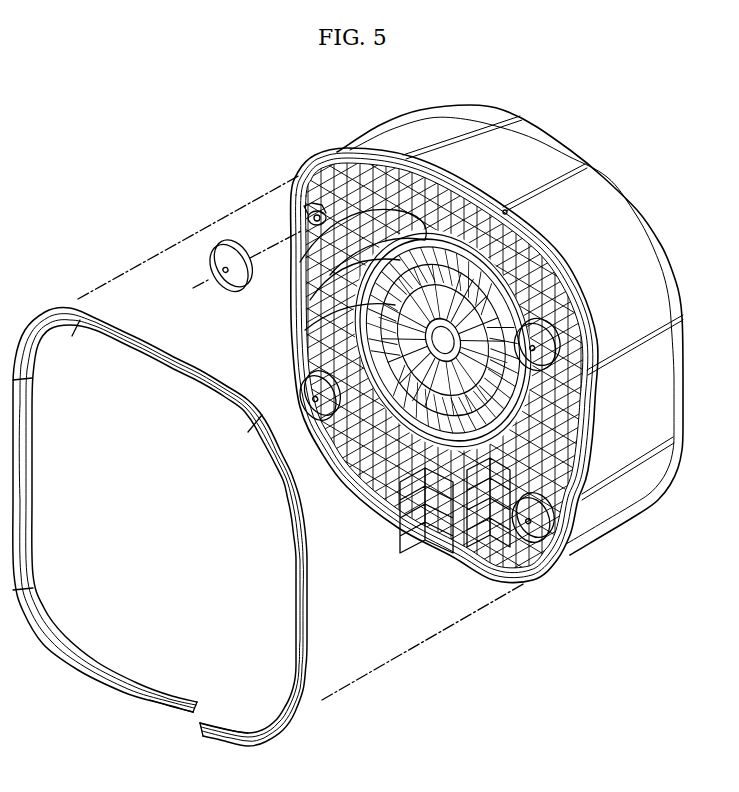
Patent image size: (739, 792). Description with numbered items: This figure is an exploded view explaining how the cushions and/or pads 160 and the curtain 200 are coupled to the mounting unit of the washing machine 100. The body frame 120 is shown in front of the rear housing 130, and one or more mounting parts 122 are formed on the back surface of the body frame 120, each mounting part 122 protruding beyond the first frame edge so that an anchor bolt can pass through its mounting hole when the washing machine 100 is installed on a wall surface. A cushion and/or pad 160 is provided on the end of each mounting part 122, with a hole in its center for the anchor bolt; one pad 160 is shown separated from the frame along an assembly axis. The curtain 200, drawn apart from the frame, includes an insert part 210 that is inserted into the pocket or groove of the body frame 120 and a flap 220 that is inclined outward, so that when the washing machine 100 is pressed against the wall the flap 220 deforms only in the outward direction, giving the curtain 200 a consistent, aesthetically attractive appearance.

The washing machine 100 is at (304, 86).
The body frame 120 is at (406, 538).
The mounting part 122 is at (303, 219).
The housing 130 is at (518, 156).
The cushion and/or pad 160 is at (213, 272).
The curtain 200 is at (92, 685).
The insert part 210 is at (186, 701).
The flap 220 is at (165, 718).